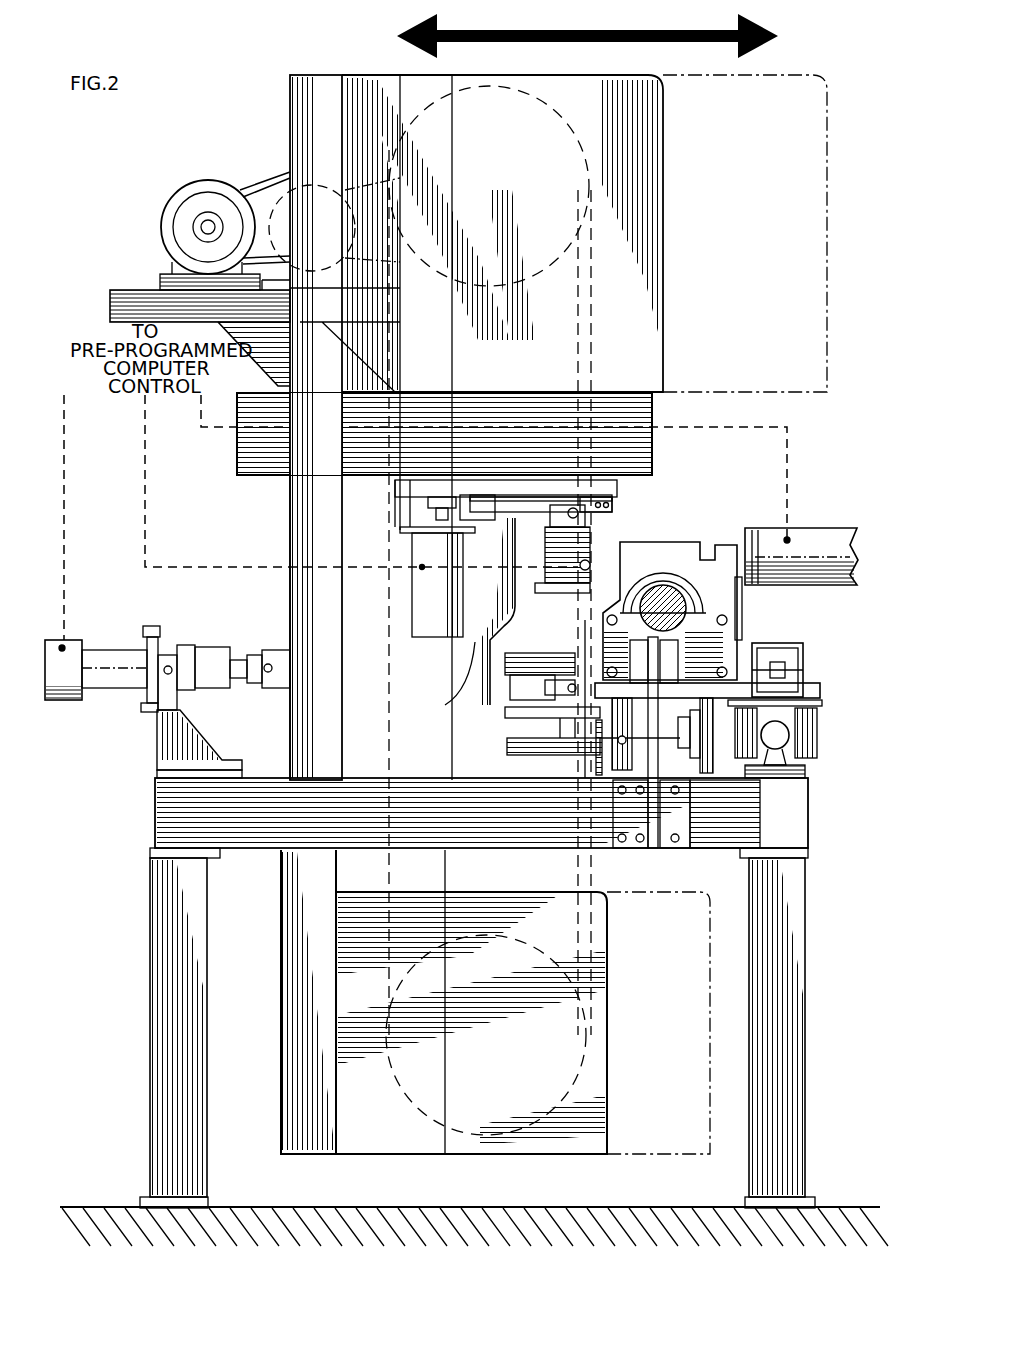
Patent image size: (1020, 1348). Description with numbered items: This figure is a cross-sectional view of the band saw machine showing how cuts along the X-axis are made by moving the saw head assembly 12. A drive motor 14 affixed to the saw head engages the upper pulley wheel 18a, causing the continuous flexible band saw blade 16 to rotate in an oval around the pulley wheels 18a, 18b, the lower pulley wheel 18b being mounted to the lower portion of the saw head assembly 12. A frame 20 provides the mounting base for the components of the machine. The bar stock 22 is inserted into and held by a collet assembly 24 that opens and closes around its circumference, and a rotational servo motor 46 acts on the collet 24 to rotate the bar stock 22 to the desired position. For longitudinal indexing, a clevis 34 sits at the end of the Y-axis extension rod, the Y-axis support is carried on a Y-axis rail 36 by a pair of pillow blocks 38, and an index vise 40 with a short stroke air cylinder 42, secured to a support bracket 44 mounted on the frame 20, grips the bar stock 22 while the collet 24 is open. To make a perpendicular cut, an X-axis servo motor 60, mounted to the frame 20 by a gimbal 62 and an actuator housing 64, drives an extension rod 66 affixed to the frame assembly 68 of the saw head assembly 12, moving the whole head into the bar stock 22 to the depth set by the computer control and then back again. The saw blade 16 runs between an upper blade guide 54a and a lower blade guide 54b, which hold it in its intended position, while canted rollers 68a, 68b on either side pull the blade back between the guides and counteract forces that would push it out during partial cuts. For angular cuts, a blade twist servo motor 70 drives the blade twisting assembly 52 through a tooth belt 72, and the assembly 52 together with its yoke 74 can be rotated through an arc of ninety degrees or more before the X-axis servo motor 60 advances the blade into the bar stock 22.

The saw head assembly 12 is at (542, 82).
The drive motor 14 is at (197, 198).
The band saw blade 16 is at (630, 336).
The pulley wheel 18a is at (408, 121).
The pulley wheel 18b is at (435, 1128).
The frame 20 is at (167, 806).
The bar stock 22 is at (672, 590).
The collet assembly 24 is at (642, 551).
The clevis 34 is at (774, 668).
The Y-axis rail 36 is at (776, 736).
The pillow blocks 38 is at (792, 699).
The index vise 40 is at (700, 792).
The short stroke air cylinder 42 is at (706, 770).
The support bracket 44 is at (663, 840).
The rotational servo motor 46 is at (778, 540).
The blade twisting assembly 52 is at (607, 482).
The upper blade guide 54a is at (600, 549).
The lower blade guide 54b is at (512, 670).
The X-axis servo motor 60 is at (75, 637).
The gimbal 62 is at (158, 637).
The actuator housing 64 is at (205, 650).
The extension rod 66 is at (250, 652).
The frame assembly 68 is at (300, 528).
The canted roller 68a is at (560, 545).
The canted roller 68b is at (540, 722).
The blade twist servo motor 70 is at (410, 549).
The tooth belt 72 is at (505, 520).
The yoke 74 is at (486, 648).